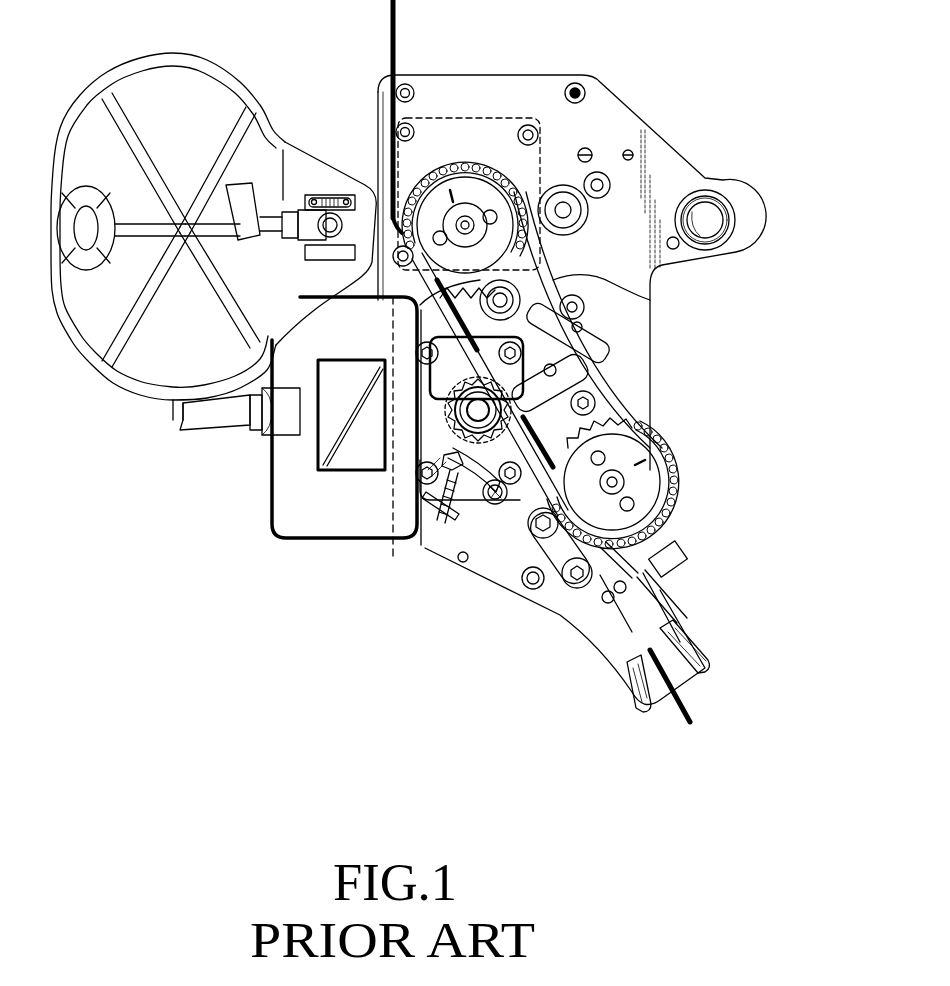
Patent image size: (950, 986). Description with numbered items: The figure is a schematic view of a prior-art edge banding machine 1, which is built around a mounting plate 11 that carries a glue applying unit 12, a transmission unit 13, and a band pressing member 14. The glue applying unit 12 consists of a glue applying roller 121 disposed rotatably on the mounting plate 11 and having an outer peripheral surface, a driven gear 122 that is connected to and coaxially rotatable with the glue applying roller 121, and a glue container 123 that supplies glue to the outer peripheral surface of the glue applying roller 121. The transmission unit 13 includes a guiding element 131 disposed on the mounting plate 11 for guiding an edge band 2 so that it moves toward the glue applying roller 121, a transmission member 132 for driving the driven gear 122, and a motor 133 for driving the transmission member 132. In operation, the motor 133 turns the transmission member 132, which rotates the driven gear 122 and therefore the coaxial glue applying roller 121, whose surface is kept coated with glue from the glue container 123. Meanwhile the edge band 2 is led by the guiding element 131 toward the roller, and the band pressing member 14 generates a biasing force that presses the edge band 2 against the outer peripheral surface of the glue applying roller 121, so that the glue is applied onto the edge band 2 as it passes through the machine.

The edge banding machine 1 is at (334, 558).
The edge band 2 is at (682, 727).
The mounting plate 11 is at (565, 608).
The glue applying unit 12 is at (445, 390).
The glue applying roller 121 is at (476, 512).
The driven gear 122 is at (440, 420).
The glue container 123 is at (293, 542).
The transmission unit 13 is at (652, 295).
The guiding element 131 is at (625, 692).
The transmission member 132 is at (463, 160).
The motor 133 is at (495, 118).
The band pressing member 14 is at (615, 428).